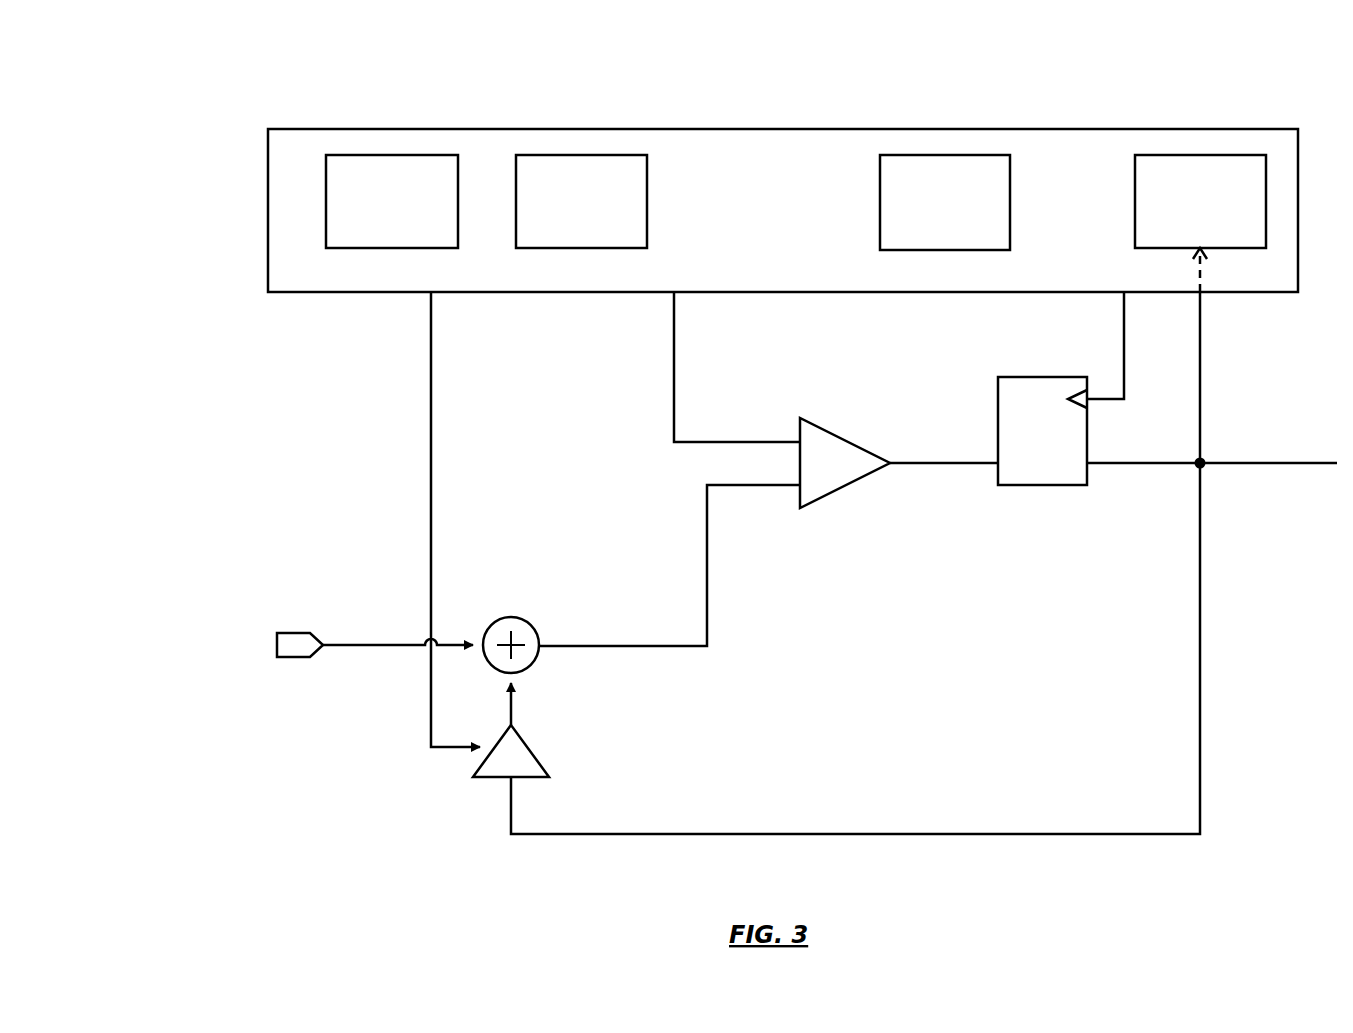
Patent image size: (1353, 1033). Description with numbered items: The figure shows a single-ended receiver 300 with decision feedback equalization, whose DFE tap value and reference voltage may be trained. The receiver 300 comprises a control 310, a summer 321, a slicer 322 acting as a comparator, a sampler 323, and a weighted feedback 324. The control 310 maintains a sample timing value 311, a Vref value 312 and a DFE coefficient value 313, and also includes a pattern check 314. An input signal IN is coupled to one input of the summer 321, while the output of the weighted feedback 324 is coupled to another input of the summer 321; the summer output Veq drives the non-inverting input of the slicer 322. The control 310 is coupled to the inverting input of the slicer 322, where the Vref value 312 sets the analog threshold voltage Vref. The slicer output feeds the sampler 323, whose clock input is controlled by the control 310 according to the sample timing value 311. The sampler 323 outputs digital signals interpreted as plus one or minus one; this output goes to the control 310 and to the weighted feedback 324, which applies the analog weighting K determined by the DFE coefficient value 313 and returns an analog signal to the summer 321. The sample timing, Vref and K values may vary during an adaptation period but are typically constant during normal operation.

The receiver 300 is at (203, 57).
The control 310 is at (783, 210).
The sample timing value 311 is at (392, 201).
The Vref value 312 is at (581, 201).
The DFE coefficient value 313 is at (945, 202).
The pattern check 314 is at (1200, 201).
The summer 321 is at (527, 622).
The slicer 322 is at (845, 486).
The sampler 323 is at (1055, 485).
The weighted feedback 324 is at (535, 758).